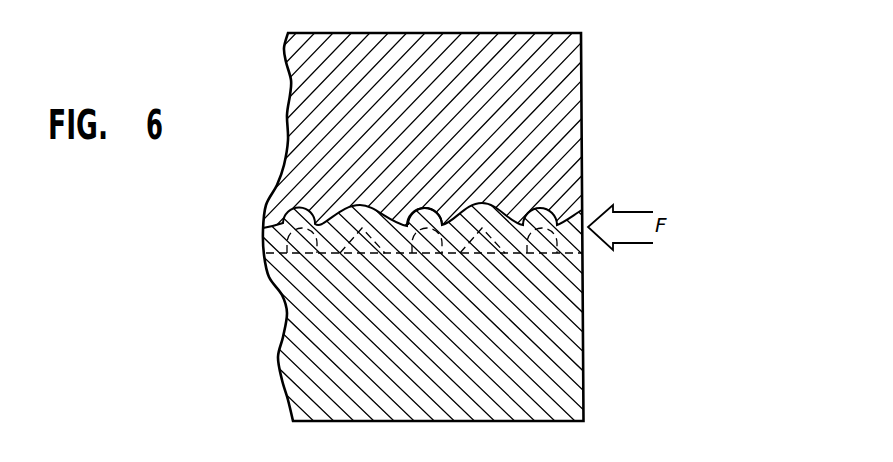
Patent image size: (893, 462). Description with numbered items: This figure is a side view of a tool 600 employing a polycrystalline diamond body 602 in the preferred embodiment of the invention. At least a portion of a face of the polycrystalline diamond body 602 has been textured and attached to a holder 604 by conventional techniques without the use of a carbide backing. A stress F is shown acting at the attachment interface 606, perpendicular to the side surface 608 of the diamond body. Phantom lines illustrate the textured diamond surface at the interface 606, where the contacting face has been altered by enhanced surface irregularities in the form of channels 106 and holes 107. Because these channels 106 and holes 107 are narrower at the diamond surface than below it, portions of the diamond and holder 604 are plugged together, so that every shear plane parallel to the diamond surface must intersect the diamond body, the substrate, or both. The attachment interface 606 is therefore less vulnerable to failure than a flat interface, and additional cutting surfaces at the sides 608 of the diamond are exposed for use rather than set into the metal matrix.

The tool 600 is at (661, 263).
The polycrystalline diamond body 602 is at (291, 84).
The holder 604 is at (576, 325).
The attachment interface 606 is at (583, 207).
The side surface 608 is at (583, 123).
The channel 106 is at (348, 203).
The hole 107 is at (433, 207).